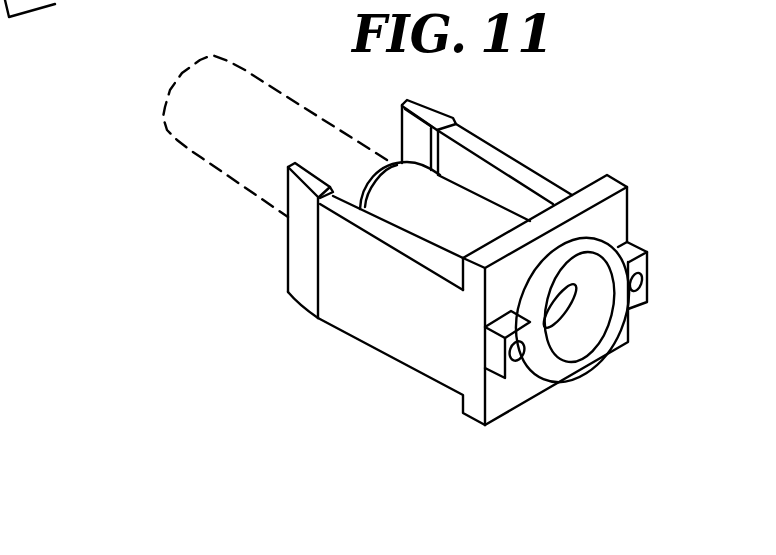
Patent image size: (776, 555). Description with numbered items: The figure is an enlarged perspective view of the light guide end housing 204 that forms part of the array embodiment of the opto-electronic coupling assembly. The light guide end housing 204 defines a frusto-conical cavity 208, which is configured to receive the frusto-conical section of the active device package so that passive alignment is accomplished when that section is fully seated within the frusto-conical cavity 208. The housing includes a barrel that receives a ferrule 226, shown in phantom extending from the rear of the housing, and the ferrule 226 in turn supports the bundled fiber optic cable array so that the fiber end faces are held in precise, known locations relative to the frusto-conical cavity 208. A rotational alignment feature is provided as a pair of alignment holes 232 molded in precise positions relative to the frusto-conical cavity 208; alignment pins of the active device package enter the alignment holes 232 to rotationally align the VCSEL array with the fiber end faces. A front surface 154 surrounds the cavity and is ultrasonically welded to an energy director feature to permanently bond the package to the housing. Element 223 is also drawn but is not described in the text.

The light guide end housing 204 is at (386, 357).
The cylindrical member 223 is at (481, 192).
The ferrule 226 is at (195, 152).
The front surface 154 is at (613, 266).
The frusto-conical cavity 208 is at (590, 287).
The alignment holes 232 is at (643, 279).